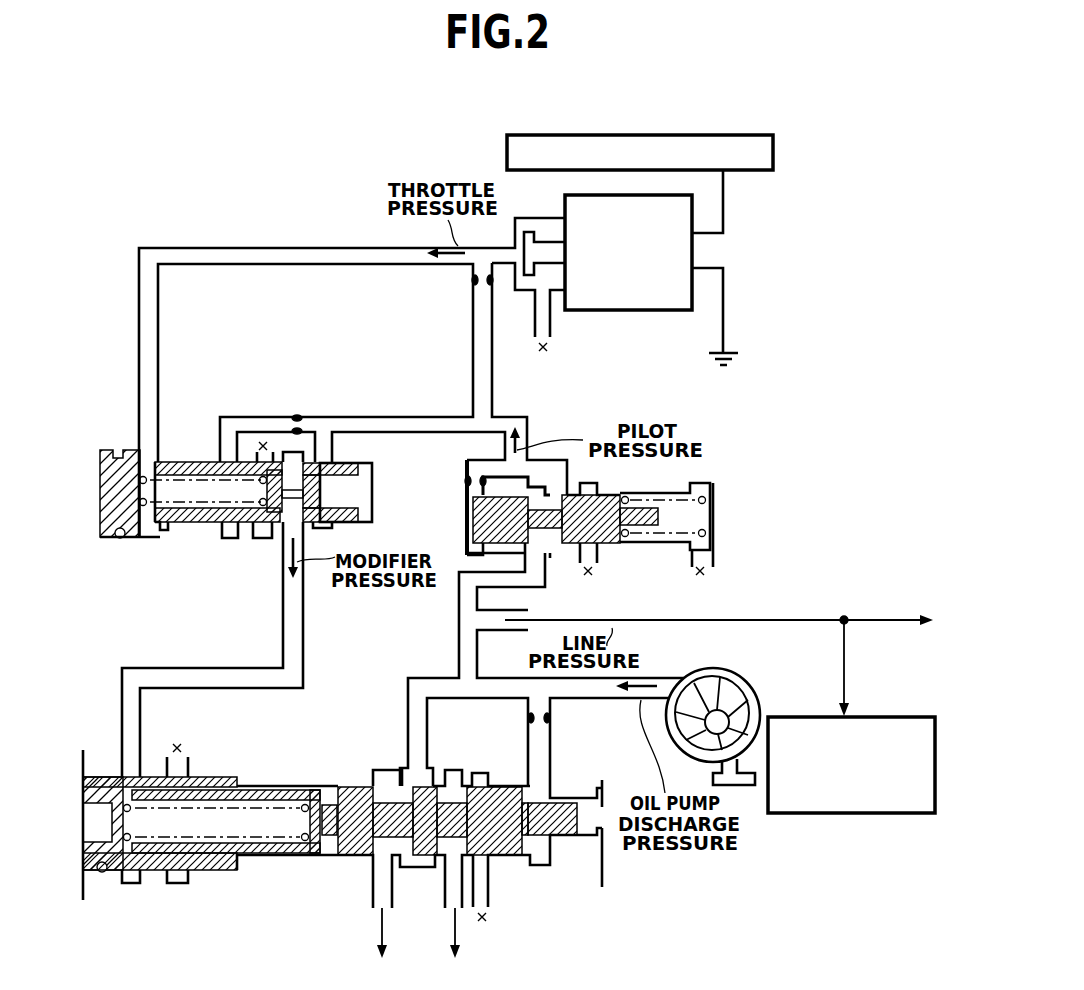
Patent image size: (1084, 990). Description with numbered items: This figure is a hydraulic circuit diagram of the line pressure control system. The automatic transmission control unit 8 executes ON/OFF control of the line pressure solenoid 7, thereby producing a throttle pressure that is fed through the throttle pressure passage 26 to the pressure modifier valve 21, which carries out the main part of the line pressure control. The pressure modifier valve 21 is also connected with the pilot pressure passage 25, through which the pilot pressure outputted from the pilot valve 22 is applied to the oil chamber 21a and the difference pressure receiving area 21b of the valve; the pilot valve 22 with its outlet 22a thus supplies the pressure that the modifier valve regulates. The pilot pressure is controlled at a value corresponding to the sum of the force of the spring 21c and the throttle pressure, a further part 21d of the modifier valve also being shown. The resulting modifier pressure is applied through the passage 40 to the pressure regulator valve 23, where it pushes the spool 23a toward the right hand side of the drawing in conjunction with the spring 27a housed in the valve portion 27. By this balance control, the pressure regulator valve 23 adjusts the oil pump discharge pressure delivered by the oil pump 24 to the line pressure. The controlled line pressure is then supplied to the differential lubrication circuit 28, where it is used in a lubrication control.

The automatic transmission control unit (ATCU) 8 is at (710, 135).
The line pressure solenoid 7 is at (628, 310).
The throttle pressure passage 26 is at (280, 246).
The pilot pressure passage 25 is at (398, 416).
The pressure modifier valve 21 is at (271, 498).
The oil chamber 21a is at (357, 492).
The difference pressure receiving area 21b is at (225, 522).
The spring 21c is at (157, 537).
The port of pressure modifier valve 21d is at (193, 527).
The pilot valve 22 is at (607, 532).
The line pressure output passage of pilot valve 22a is at (575, 535).
The pressure regulator valve 23 is at (467, 842).
The spool 23a is at (558, 825).
The oil pump 24 is at (743, 672).
The accumulator valve 27 is at (210, 840).
The spring 27a is at (290, 830).
The differential lubrication circuit 28 is at (887, 717).
The passage 40 is at (128, 690).